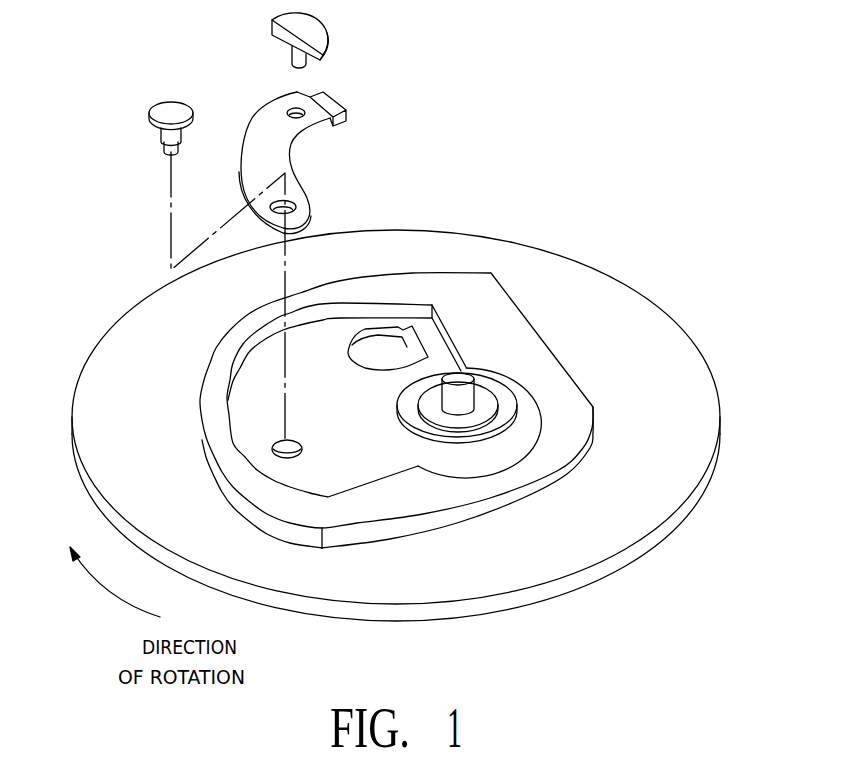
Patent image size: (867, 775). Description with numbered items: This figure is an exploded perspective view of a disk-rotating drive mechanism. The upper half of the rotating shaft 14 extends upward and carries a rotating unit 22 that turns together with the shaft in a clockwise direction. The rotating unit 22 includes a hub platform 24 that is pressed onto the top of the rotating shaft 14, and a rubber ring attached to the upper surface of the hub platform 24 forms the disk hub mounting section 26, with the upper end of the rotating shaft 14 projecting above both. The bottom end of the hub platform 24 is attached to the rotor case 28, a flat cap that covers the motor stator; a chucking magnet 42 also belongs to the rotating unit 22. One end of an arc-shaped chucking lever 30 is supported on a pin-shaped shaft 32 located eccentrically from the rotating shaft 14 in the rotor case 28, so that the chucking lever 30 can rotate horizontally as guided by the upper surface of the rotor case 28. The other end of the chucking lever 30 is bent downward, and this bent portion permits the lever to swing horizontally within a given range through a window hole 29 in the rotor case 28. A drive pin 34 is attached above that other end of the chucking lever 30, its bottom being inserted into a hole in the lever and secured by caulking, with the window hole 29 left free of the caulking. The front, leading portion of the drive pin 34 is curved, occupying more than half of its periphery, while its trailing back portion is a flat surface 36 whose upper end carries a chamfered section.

The rotating shaft 14 is at (466, 369).
The rotating unit 22 is at (530, 218).
The hub platform 24 is at (472, 418).
The disk hub mounting section 26 is at (508, 405).
The rotor case 28 is at (685, 400).
The window hole 29 is at (407, 347).
The chucking lever 30 is at (267, 115).
The pin-shaped shaft 32 is at (155, 115).
The drive pin 34 is at (313, 32).
The flat surface 36 is at (282, 35).
The chucking magnet 42 is at (212, 407).